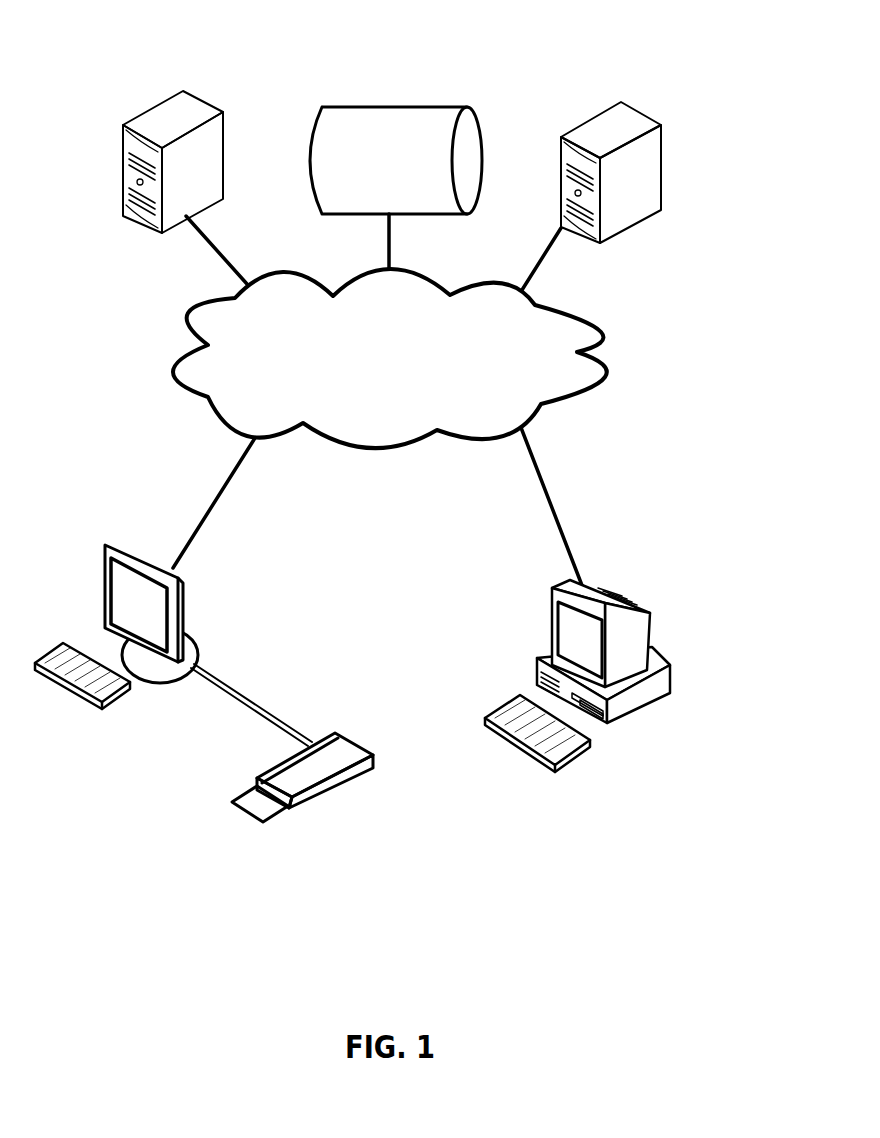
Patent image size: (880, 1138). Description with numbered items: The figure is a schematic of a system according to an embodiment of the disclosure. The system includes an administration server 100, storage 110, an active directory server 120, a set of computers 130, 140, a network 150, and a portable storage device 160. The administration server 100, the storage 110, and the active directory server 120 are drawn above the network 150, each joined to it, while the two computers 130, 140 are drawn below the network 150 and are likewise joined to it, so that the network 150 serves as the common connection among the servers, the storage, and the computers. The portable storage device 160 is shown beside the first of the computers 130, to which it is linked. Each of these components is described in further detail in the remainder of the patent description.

The Administration Server 100 is at (183, 135).
The Storage 110 is at (396, 160).
The Active Directory Server 120 is at (618, 130).
The Computer 130 is at (116, 642).
The Computer 140 is at (615, 676).
The Network 150 is at (390, 358).
The Portable Storage Device 160 is at (318, 824).